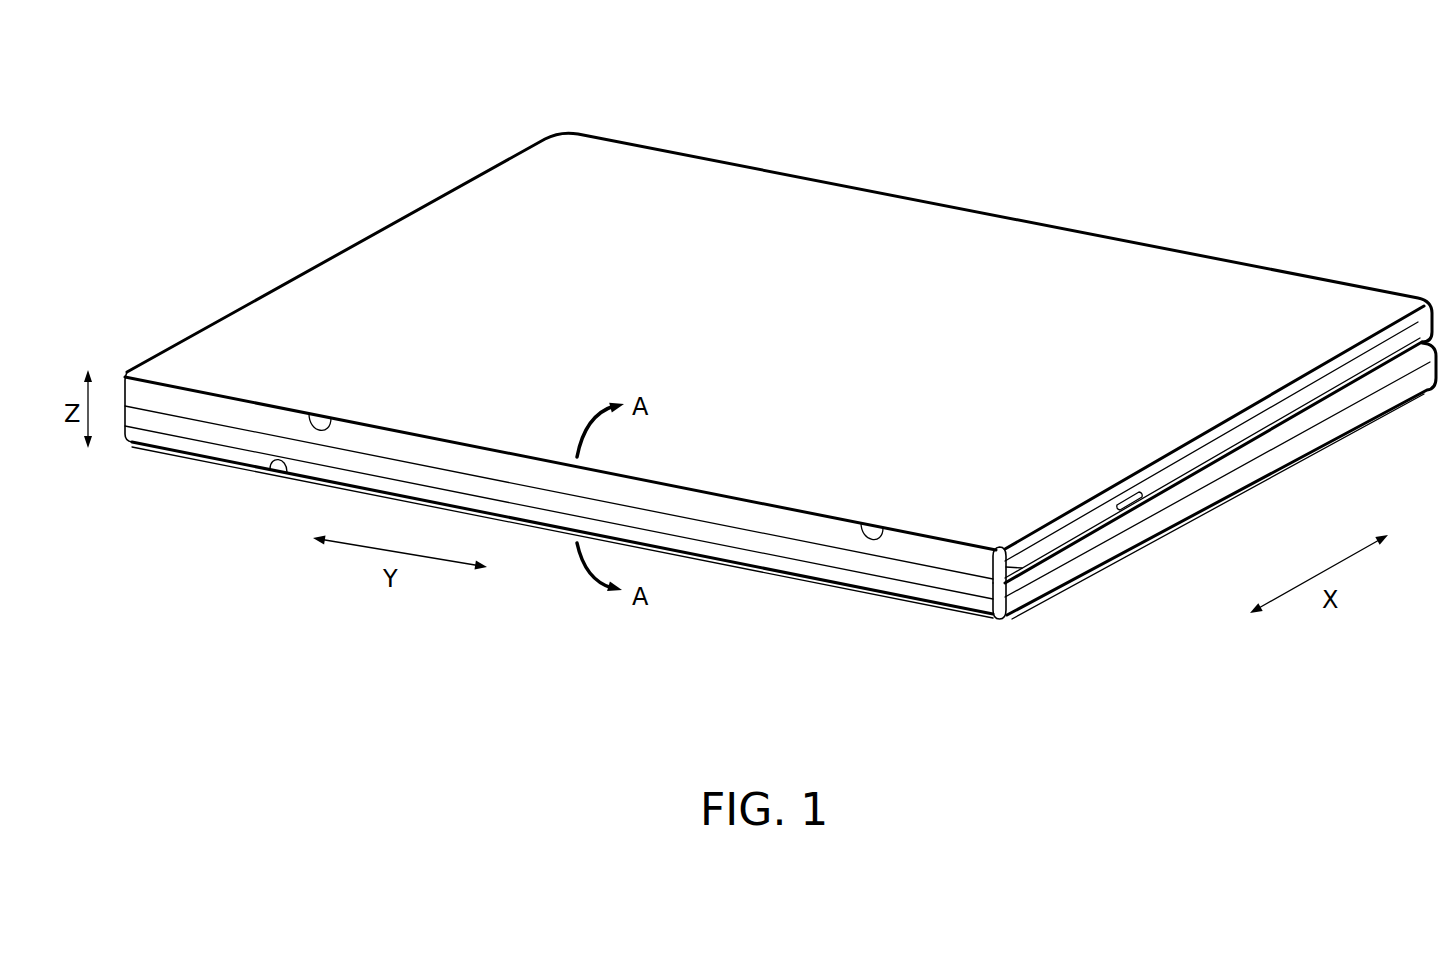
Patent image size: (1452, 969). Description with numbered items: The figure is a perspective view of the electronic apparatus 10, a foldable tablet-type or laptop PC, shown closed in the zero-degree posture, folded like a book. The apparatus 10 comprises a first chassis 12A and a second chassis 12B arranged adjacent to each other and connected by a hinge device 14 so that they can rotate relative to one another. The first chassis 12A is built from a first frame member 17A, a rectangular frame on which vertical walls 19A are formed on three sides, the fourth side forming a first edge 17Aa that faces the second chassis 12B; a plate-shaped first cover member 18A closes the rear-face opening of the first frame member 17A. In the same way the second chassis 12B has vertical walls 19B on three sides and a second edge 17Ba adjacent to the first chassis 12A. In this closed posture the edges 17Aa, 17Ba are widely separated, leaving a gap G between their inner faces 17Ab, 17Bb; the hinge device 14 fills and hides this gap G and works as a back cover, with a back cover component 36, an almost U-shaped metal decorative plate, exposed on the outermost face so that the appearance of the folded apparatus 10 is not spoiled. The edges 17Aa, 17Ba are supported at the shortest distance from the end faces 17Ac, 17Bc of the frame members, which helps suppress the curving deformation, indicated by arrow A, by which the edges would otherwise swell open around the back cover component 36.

The electronic apparatus 10 is at (186, 101).
The first chassis 12A is at (893, 222).
The second chassis 12B is at (1272, 486).
The hinge device 14 is at (753, 546).
The first cover member 18A is at (1060, 262).
The first frame member 17A is at (831, 472).
The first edge 17Aa is at (511, 423).
The inner face 17Ab is at (330, 420).
The end face 17Ac is at (1057, 605).
The second edge 17Ba is at (509, 524).
The inner face 17Bb is at (281, 474).
The end face 17Bc is at (1017, 622).
The vertical walls 19A is at (1087, 522).
The vertical walls 19B is at (1083, 563).
The back cover component 36 is at (876, 584).
The gap G is at (874, 537).